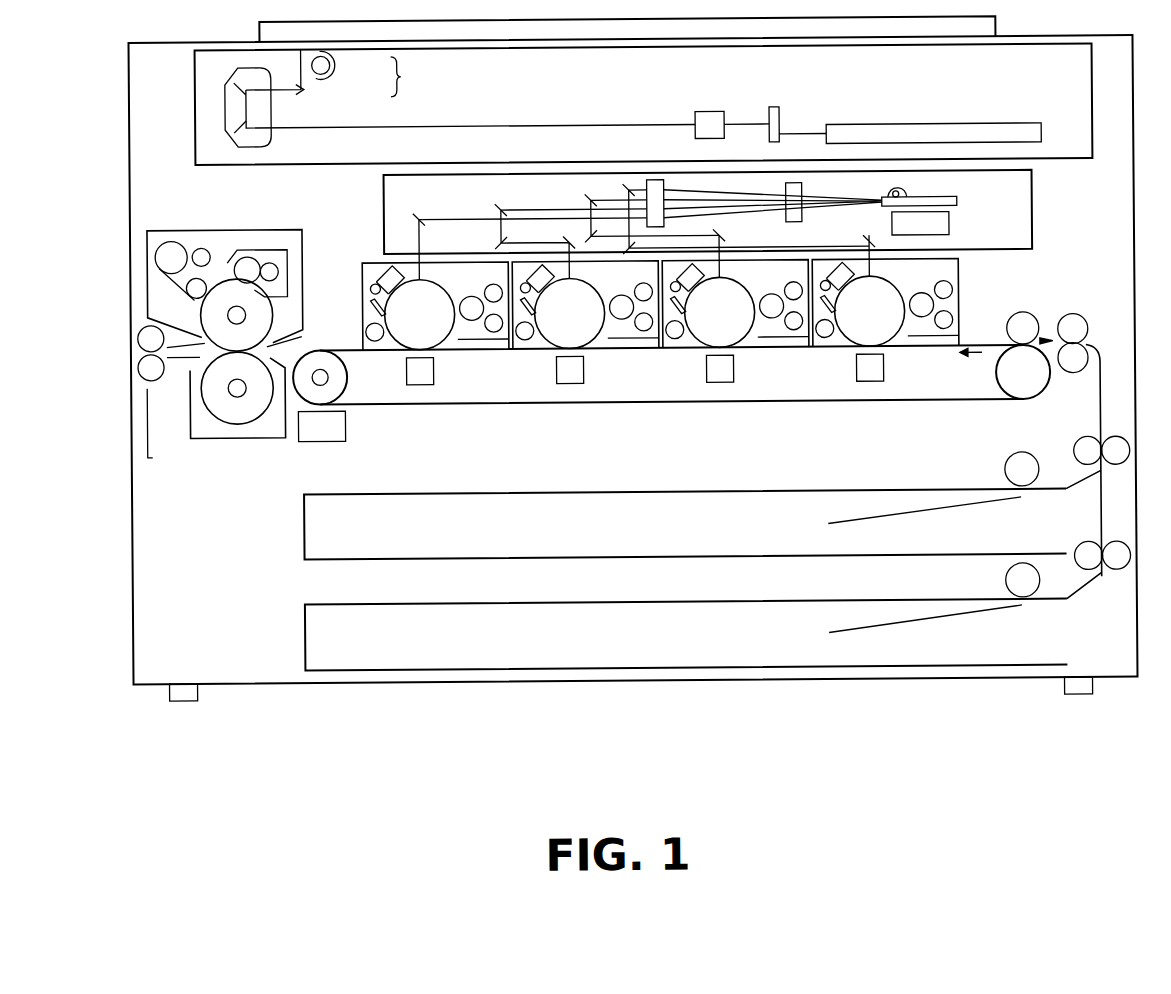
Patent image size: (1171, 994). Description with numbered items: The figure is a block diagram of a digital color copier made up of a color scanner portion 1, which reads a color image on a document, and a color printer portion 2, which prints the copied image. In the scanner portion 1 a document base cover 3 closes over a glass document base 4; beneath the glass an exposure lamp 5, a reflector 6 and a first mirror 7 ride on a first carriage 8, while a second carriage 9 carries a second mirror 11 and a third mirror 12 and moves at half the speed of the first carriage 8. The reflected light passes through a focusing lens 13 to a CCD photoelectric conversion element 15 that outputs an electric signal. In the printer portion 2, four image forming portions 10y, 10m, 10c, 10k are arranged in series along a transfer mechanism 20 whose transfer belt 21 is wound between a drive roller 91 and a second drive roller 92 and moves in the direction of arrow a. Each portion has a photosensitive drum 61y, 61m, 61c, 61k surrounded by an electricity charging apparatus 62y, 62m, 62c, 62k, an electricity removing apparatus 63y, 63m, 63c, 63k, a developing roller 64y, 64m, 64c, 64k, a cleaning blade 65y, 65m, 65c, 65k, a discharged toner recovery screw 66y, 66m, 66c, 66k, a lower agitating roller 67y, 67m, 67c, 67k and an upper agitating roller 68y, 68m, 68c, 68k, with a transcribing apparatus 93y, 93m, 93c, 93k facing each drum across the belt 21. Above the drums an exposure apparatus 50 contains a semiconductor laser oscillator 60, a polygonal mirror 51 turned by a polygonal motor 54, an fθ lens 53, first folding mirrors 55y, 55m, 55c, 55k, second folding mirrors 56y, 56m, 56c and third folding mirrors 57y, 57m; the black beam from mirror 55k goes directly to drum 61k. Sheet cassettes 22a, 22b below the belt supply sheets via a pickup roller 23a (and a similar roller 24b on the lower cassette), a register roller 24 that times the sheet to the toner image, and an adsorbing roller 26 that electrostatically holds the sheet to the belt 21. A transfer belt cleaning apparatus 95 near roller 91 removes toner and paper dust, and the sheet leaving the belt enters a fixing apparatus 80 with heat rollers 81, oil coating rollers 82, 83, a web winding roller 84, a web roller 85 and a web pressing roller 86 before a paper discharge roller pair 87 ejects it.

The color scanner portion 1 is at (618, 70).
The color printer portion 2 is at (350, 218).
The document base cover 3 is at (524, 34).
The document base 4 is at (509, 52).
The exposure lamp 5 is at (338, 62).
The reflector 6 is at (337, 75).
The first mirror 7 is at (301, 88).
The first carriage 8 is at (402, 77).
The second carriage 9 is at (272, 140).
The image forming portion 10k is at (433, 379).
The image forming portion 10c is at (579, 380).
The image forming portion 10m is at (728, 381).
The image forming portion 10y is at (886, 382).
The second mirror 11 is at (244, 77).
The third mirror 12 is at (244, 139).
The focusing lens 13 is at (712, 112).
The photoelectric conversion element 15 is at (776, 108).
The transfer mechanism 20 is at (947, 404).
The transfer belt 21 is at (984, 343).
The sheet cassette 22a is at (303, 527).
The sheet cassette 22b is at (303, 637).
The pickup roller 23a is at (1004, 468).
The register roller 24 is at (1075, 317).
The pickup roller 24b is at (1004, 582).
The adsorbing roller 26 is at (1027, 315).
The exposure apparatus 50 is at (1033, 200).
The polygonal mirror 51 is at (803, 187).
The fθ lens 53 is at (667, 182).
The polygonal motor 54 is at (950, 228).
The first folding mirror 55k is at (420, 216).
The first folding mirror 55c is at (502, 208).
The first folding mirror 55m is at (592, 199).
The first folding mirror 55y is at (630, 189).
The second folding mirror 56c is at (500, 242).
The second folding mirror 56m is at (590, 239).
The second folding mirror 56y is at (630, 246).
The third folding mirror 57m is at (724, 237).
The third folding mirror 57y is at (870, 241).
The semiconductor laser oscillator 60 is at (900, 192).
The photosensitive drum 61k is at (433, 281).
The photosensitive drum 61c is at (576, 281).
The photosensitive drum 61m is at (725, 281).
The photosensitive drum 61y is at (892, 281).
The electricity charging apparatus 62k is at (388, 266).
The electricity charging apparatus 62c is at (543, 262).
The electricity charging apparatus 62m is at (701, 266).
The electricity charging apparatus 62y is at (843, 262).
The electricity removing apparatus 63k is at (372, 282).
The electricity removing apparatus 63c is at (527, 274).
The electricity removing apparatus 63m is at (677, 276).
The electricity removing apparatus 63y is at (826, 276).
The developing roller 64k is at (465, 335).
The developing roller 64c is at (605, 340).
The developing roller 64m is at (757, 340).
The developing roller 64y is at (921, 321).
The cleaning blade 65k is at (370, 290).
The cleaning blade 65c is at (523, 352).
The cleaning blade 65m is at (672, 352).
The cleaning blade 65y is at (818, 352).
The discharged toner recovery screw 66k is at (366, 326).
The discharged toner recovery screw 66c is at (530, 341).
The discharged toner recovery screw 66m is at (681, 341).
The discharged toner recovery screw 66y is at (832, 341).
The lower agitating roller 67k is at (492, 332).
The lower agitating roller 67c is at (645, 332).
The lower agitating roller 67m is at (794, 332).
The lower agitating roller 67y is at (945, 332).
The upper agitating roller 68k is at (493, 283).
The upper agitating roller 68c is at (644, 284).
The upper agitating roller 68m is at (793, 284).
The upper agitating roller 68y is at (960, 289).
The fixing apparatus 80 is at (310, 259).
The heat rollers 81 is at (237, 423).
The oil coating roller 82 is at (270, 260).
The oil coating roller 83 is at (248, 254).
The web winding roller 84 is at (202, 245).
The web roller 85 is at (172, 238).
The web pressing roller 86 is at (187, 294).
The paper discharge roller pair 87 is at (160, 380).
The drive roller 91 is at (340, 398).
The drive roller 92 is at (1003, 400).
The transcribing apparatus 93k is at (416, 404).
The transcribing apparatus 93c is at (563, 404).
The transcribing apparatus 93m is at (712, 404).
The transcribing apparatus 93y is at (868, 404).
The transfer belt cleaning apparatus 95 is at (334, 440).
The transfer direction a is at (1006, 350).